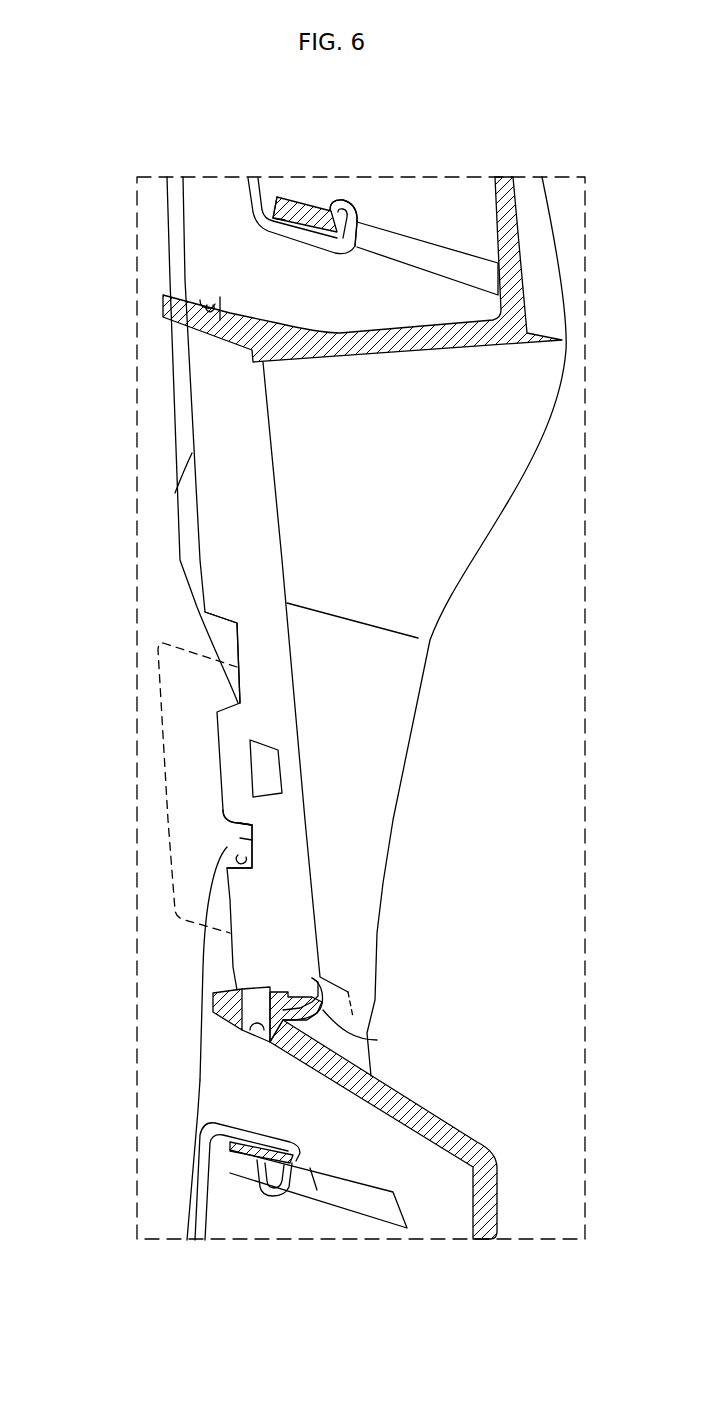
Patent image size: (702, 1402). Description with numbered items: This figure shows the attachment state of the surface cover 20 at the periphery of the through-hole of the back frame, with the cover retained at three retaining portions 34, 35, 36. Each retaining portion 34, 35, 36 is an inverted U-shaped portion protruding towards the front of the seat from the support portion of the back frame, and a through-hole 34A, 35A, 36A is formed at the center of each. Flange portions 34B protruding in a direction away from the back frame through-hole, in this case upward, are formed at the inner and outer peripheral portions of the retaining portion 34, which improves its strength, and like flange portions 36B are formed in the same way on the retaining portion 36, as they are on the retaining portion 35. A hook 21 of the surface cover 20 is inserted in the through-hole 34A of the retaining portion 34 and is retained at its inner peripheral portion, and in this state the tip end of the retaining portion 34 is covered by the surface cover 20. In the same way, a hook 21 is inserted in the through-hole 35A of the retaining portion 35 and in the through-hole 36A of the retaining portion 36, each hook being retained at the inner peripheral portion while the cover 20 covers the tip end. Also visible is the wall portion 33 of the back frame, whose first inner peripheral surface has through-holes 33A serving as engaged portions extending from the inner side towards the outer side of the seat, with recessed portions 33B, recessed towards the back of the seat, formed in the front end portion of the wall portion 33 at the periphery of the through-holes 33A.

The surface cover 20 is at (253, 197).
The hook 21 is at (347, 203).
The wall portion 33 is at (226, 537).
The through-hole 33A is at (209, 302).
The recessed portion 33B is at (232, 630).
The retaining portion 34 is at (312, 196).
The through-hole 34A is at (404, 238).
The flange portion 34B is at (273, 196).
The retaining portion 35 is at (220, 882).
The through-hole 35A is at (237, 846).
The retaining portion 36 is at (268, 1212).
The through-hole 36A is at (357, 1204).
The lower plate end 36B is at (225, 1167).